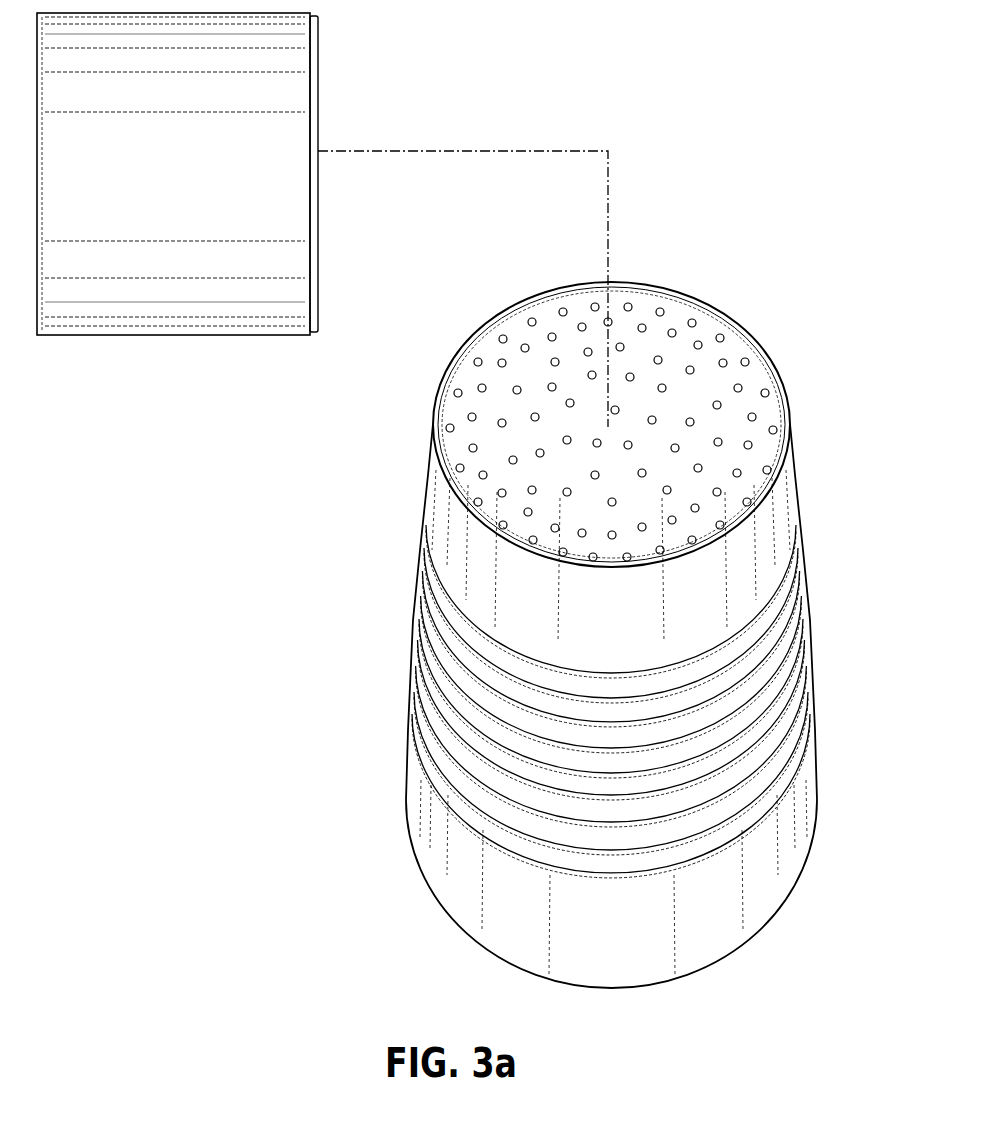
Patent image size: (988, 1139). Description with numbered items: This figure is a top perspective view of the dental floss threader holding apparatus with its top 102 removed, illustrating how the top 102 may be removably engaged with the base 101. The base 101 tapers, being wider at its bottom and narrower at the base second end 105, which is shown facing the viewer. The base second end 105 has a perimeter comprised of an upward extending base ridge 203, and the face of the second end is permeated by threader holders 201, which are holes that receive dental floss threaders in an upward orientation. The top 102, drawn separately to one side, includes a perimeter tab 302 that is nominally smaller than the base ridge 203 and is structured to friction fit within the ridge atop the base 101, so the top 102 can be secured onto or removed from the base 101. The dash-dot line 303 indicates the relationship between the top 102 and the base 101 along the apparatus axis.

The base 101 is at (813, 797).
The top 102 is at (195, 310).
The base second end 105 is at (786, 392).
The threader holders 201 is at (723, 363).
The base ridge 203 is at (690, 297).
The perimeter tab 302 is at (313, 333).
The connection line 303 is at (541, 150).